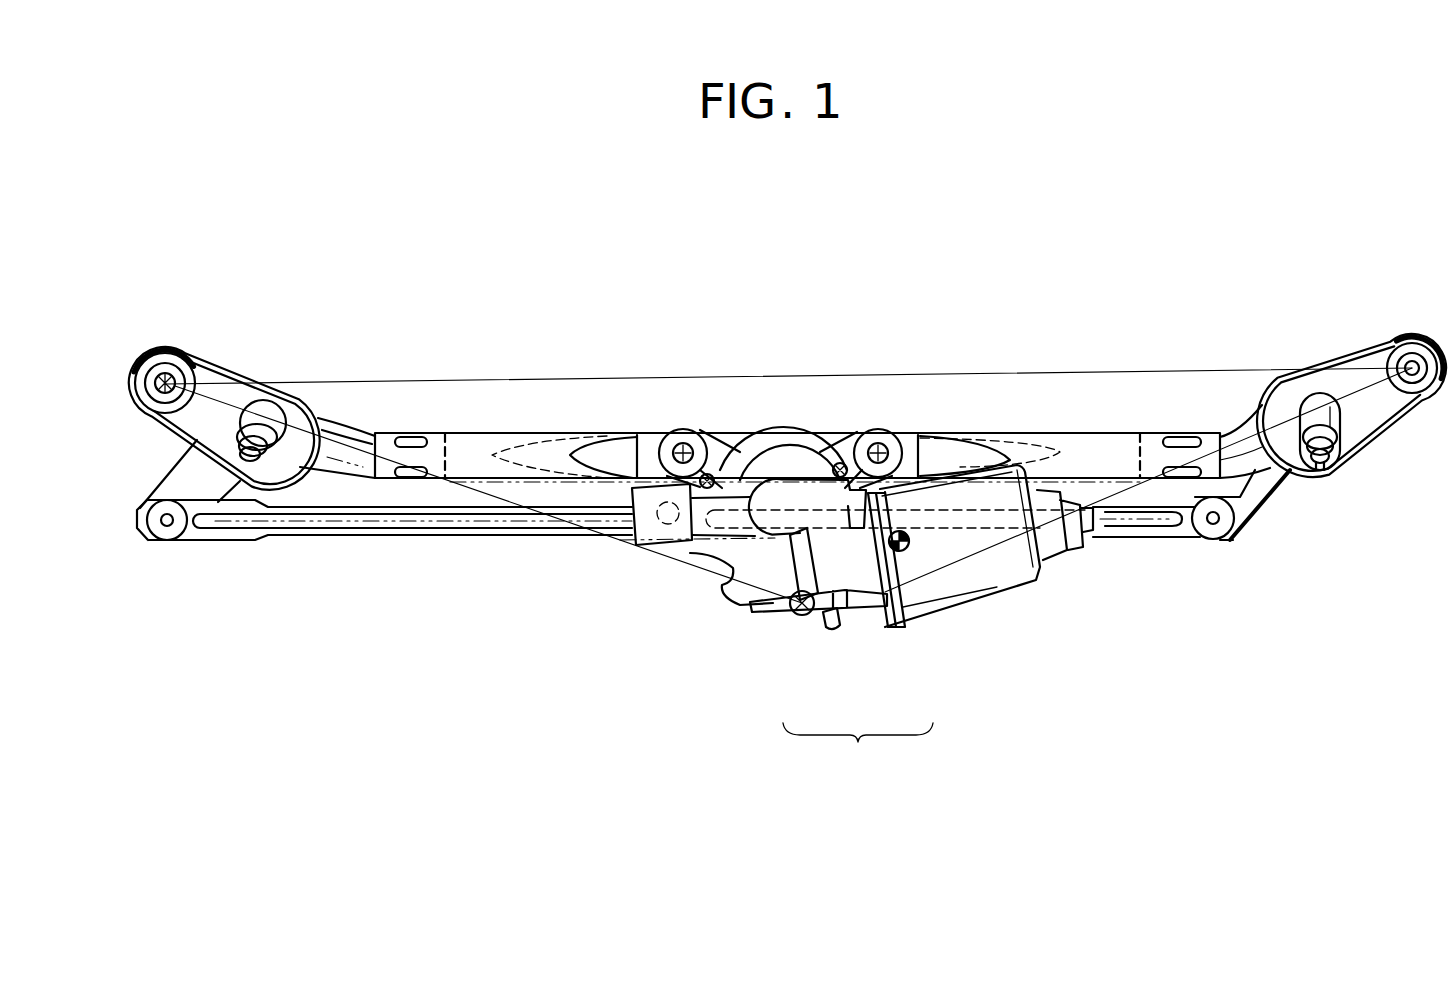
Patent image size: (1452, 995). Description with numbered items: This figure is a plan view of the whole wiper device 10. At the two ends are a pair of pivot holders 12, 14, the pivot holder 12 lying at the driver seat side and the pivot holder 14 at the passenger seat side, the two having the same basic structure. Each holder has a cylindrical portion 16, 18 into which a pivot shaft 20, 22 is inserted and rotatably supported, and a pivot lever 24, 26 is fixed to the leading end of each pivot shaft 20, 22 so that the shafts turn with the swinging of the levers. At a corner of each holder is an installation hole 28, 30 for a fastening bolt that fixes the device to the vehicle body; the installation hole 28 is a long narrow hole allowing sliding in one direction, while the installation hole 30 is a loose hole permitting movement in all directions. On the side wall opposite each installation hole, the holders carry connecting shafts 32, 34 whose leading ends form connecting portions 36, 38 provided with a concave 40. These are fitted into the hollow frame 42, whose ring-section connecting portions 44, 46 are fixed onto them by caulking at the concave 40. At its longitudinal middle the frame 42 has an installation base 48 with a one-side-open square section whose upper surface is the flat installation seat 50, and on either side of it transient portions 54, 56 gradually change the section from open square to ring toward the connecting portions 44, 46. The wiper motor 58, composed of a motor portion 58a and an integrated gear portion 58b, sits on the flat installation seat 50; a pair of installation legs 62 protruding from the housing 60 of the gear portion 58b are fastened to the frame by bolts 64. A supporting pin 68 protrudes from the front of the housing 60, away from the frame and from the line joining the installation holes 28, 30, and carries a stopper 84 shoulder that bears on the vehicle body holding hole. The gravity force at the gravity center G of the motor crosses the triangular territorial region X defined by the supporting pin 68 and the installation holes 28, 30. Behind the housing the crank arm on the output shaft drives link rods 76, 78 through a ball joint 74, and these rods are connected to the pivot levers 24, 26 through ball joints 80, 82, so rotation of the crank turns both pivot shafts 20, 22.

The wiper device 10 is at (791, 440).
The pivot holder 12 is at (272, 378).
The pivot holder 14 is at (1340, 350).
The cylindrical portion 16 is at (281, 414).
The cylindrical portion 18 is at (1302, 395).
The pivot shaft 20 is at (253, 456).
The pivot shaft 22 is at (1323, 466).
The pivot lever 24 is at (178, 490).
The pivot lever 26 is at (1278, 528).
The installation hole 28 is at (166, 378).
The installation hole 30 is at (1410, 366).
The connecting shaft 32 is at (353, 430).
The connecting shaft 34 is at (1240, 433).
The connecting portion 36 is at (446, 437).
The connecting portion 38 is at (1141, 437).
The concave 40 is at (411, 437).
The hollow frame 42 is at (1103, 427).
The connecting portion 44 is at (373, 478).
The connecting portion 46 is at (1240, 475).
The installation base 48 is at (648, 437).
The flat installation seat 50 is at (908, 443).
The transient portion 54 is at (548, 452).
The transient portion 56 is at (1008, 455).
The wiper motor 58 is at (891, 626).
The motor portion 58a is at (933, 620).
The gear portion 58b is at (765, 618).
The housing 60 is at (737, 563).
The installation legs 62 is at (698, 438).
The bolts 64 is at (683, 443).
The supporting pin 68 is at (846, 622).
The ball joint 74 is at (665, 530).
The link rod 76 is at (487, 537).
The link rod 78 is at (1104, 523).
The ball joint 80 is at (170, 537).
The ball joint 82 is at (1207, 532).
The stopper 84 is at (806, 615).
The gravity center G is at (908, 541).
The territorial region X is at (950, 373).